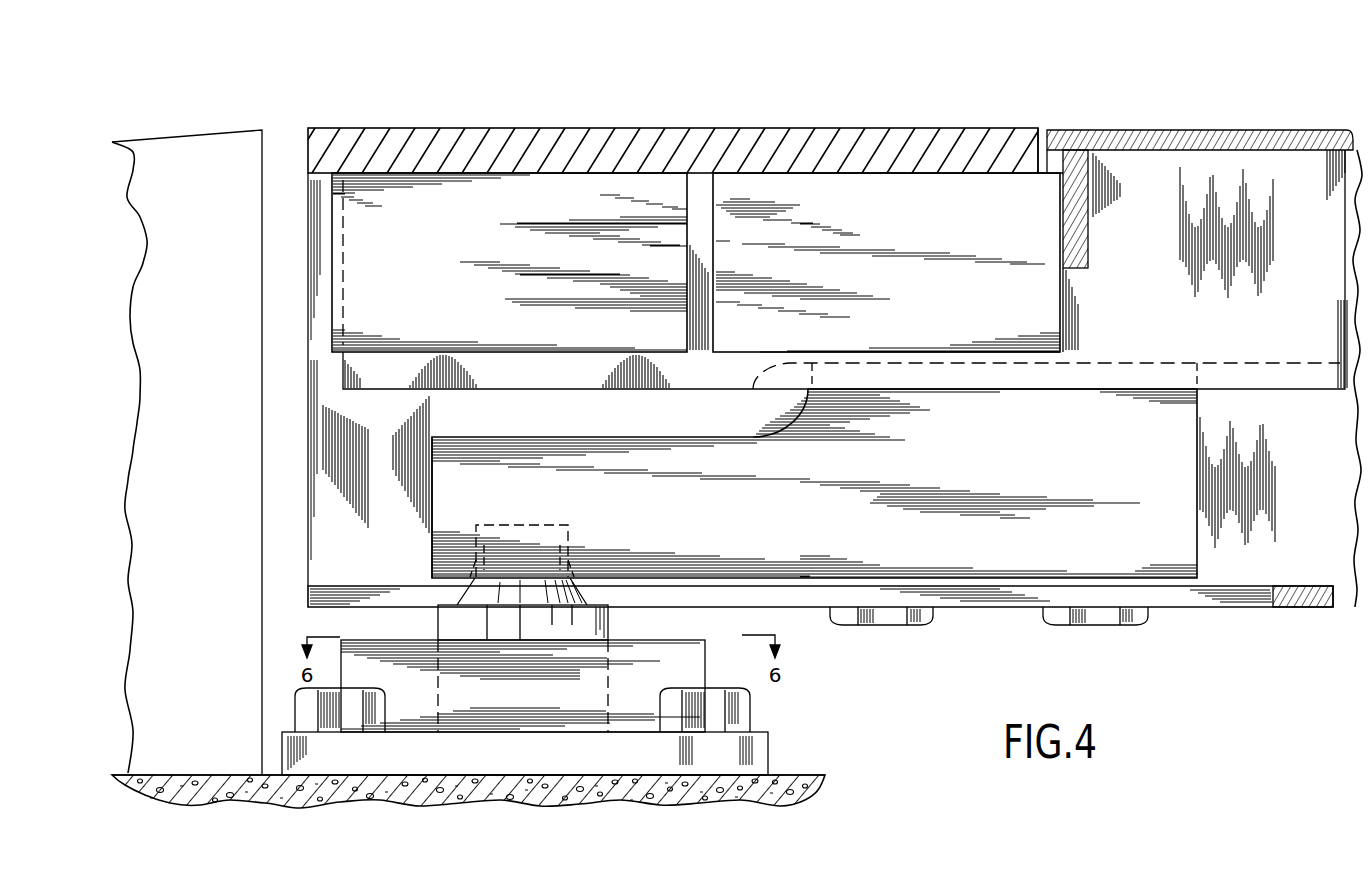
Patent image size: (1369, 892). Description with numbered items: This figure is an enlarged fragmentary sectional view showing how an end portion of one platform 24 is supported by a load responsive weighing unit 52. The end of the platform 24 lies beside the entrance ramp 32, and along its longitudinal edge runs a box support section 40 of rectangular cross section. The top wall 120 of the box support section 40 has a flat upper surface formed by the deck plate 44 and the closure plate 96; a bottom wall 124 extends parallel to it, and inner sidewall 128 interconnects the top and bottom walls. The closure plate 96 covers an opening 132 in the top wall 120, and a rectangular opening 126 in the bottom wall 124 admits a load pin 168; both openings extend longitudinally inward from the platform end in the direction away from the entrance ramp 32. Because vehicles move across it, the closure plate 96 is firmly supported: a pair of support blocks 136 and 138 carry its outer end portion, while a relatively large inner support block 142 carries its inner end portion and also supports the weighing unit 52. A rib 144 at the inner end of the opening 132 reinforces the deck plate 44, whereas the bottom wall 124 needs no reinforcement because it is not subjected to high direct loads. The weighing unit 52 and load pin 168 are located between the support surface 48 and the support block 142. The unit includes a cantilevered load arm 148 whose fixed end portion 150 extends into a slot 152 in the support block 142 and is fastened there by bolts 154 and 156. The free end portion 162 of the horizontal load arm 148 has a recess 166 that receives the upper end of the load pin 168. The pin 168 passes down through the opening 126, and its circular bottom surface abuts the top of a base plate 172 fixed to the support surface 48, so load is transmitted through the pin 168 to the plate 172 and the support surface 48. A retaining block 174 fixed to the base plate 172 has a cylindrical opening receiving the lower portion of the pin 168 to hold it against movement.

The platform 24 is at (1111, 67).
The entrance ramp 32 is at (216, 131).
The box support section 40 is at (320, 350).
The deck plate 44 is at (1258, 135).
The support surface 48 is at (800, 775).
The weighing unit 52 is at (886, 684).
The closure plate 96 is at (762, 146).
The top wall 120 is at (1034, 129).
The bottom wall 124 is at (1316, 609).
The rectangular opening 126 is at (1252, 594).
The inner sidewall 128 is at (1320, 507).
The opening 132 is at (1046, 136).
The support block 136 is at (487, 195).
The support block 138 is at (870, 205).
The inner support block 142 is at (1300, 266).
The rib 144 is at (1086, 240).
The load arm 148 is at (790, 587).
The fixed end portion 150 is at (1170, 438).
The slot 152 is at (1270, 363).
The bolt 154 is at (892, 613).
The bolt 156 is at (1092, 611).
The free end portion 162 is at (448, 503).
The recess 166 is at (566, 536).
The load pin 168 is at (600, 622).
The base plate 172 is at (298, 753).
The retaining block 174 is at (340, 668).